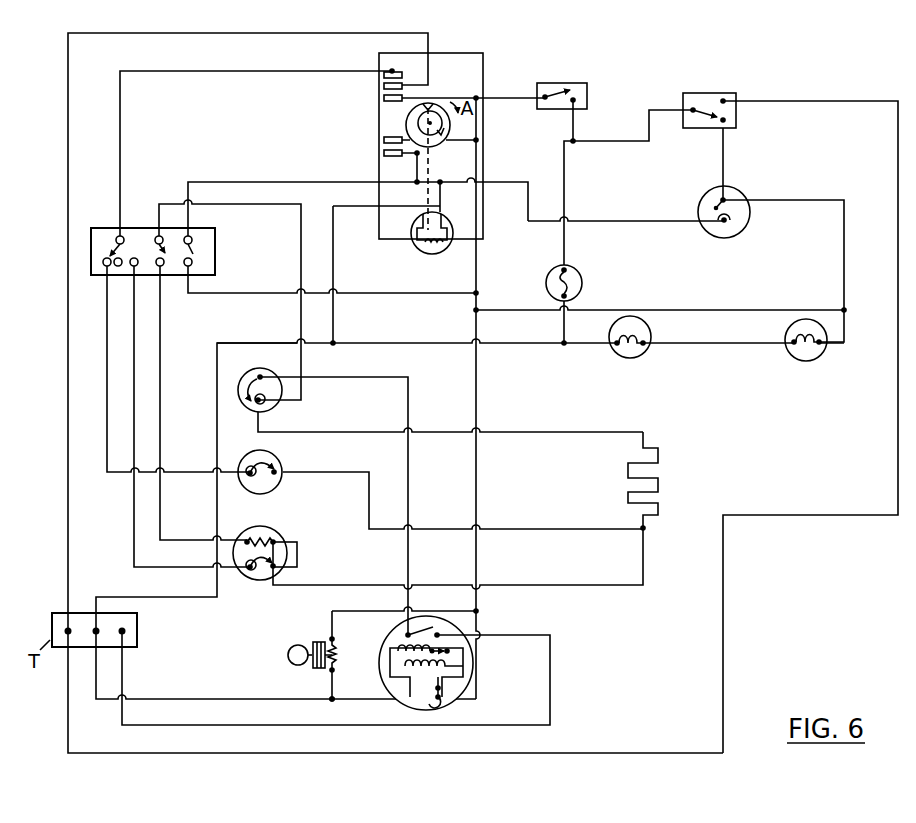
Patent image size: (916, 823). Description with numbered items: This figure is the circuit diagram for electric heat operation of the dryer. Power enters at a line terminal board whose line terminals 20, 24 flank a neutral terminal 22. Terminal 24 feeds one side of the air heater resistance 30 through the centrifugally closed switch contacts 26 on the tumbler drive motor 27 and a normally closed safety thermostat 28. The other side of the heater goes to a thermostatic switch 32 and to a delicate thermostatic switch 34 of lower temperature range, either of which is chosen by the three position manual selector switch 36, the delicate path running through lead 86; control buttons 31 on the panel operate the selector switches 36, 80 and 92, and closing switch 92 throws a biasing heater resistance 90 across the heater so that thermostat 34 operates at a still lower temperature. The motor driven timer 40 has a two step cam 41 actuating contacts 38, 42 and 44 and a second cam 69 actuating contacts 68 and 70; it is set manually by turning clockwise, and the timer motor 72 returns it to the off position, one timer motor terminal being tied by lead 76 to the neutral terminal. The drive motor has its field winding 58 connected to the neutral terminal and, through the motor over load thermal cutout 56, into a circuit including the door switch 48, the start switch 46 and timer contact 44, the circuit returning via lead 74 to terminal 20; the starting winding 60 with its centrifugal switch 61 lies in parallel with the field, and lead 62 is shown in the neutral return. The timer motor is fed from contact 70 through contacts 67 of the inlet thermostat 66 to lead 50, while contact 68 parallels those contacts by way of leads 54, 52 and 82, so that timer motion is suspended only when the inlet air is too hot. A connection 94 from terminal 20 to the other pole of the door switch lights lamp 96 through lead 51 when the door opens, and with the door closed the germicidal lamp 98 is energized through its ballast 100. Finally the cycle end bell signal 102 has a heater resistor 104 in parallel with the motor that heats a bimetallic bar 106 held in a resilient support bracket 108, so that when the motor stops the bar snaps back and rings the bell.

The line terminal 20 is at (63, 630).
The neutral terminal 22 is at (96, 628).
The line terminal 24 is at (133, 632).
The centrifugally closed switch contacts 26 is at (405, 633).
The tumbler drive motor 27 is at (325, 373).
The safety thermostat 28 is at (283, 410).
The air heater resistance 30 is at (659, 478).
The control buttons 31 is at (138, 227).
The thermostatic switch 32 is at (283, 482).
The delicate thermostatic switch 34 is at (275, 572).
The three position manual selector switch 36 is at (106, 250).
The timer contact 38 is at (403, 75).
The motor driven timer 40 is at (428, 195).
The two step cam 41 is at (418, 122).
The timer contact 42 is at (384, 86).
The timer contact 44 is at (384, 98).
The start switch 46 is at (583, 84).
The door switch 48 is at (707, 98).
The lead 50 is at (727, 167).
The lead 51 is at (380, 345).
The lead 52 is at (845, 271).
The lead 54 is at (478, 398).
The motor over load thermal cutout 56 is at (441, 704).
The field winding 58 is at (424, 668).
The starting winding 60 is at (403, 653).
The centrifugal switch 61 is at (449, 649).
The conductor 62 is at (220, 698).
The inlet thermostat 66 is at (748, 227).
The inlet thermostat contacts 67 is at (720, 198).
The timer contact 68 is at (384, 141).
The second cam 69 is at (438, 125).
The timer contact 70 is at (384, 153).
The timer motor 72 is at (432, 254).
The lead 74 is at (67, 408).
The lead 76 is at (333, 268).
The switch 80 is at (194, 251).
The lead 82 is at (617, 221).
The lead 86 is at (133, 507).
The biasing heater resistance 90 is at (264, 536).
The selector switch 92 is at (164, 247).
The connection 94 is at (724, 583).
The lamp 96 is at (582, 278).
The germicidal lamp 98 is at (797, 360).
The ballast 100 is at (614, 355).
The cycle end bell signal 102 is at (296, 645).
The heater resistor 104 is at (336, 646).
The bimetallic bar 106 is at (314, 632).
The resilient support bracket 108 is at (323, 668).